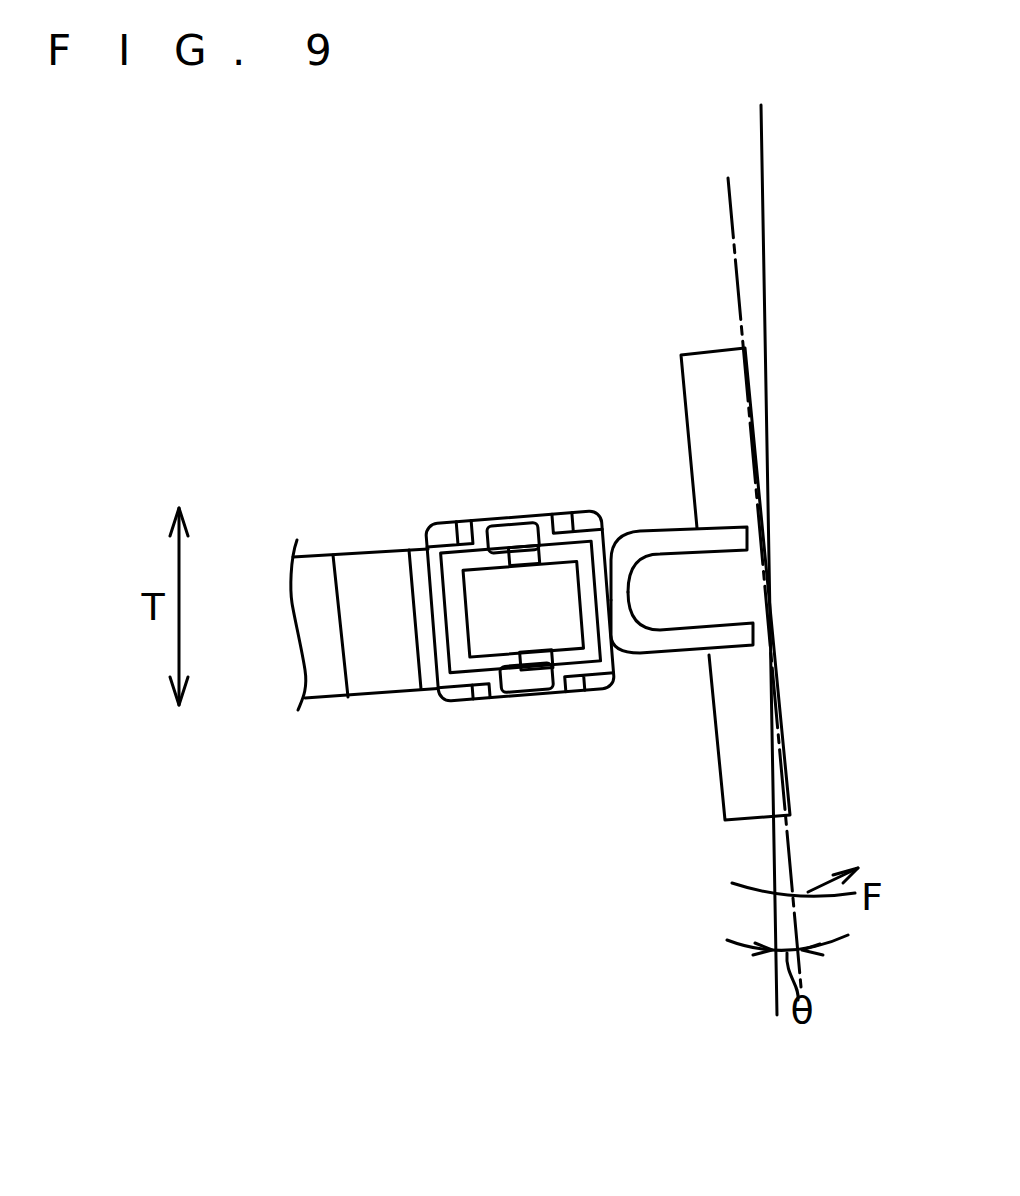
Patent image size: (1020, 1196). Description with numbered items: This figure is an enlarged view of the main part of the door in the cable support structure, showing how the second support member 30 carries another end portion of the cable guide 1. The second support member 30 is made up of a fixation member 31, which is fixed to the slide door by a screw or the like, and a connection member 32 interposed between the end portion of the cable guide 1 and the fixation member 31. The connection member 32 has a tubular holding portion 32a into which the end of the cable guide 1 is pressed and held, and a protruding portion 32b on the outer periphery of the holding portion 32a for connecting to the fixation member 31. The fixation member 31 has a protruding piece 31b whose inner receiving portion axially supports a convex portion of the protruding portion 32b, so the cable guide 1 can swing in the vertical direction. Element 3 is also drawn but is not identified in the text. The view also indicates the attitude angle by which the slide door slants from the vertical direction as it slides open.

The cable guide 1 is at (364, 619).
The cable sheath 3 is at (373, 693).
The second support member 30 is at (690, 612).
The fixation member 31 is at (718, 758).
The protruding piece 31b is at (642, 642).
The connection member 32 is at (580, 594).
The holding portion 32a is at (492, 517).
The protruding portion 32b is at (622, 540).